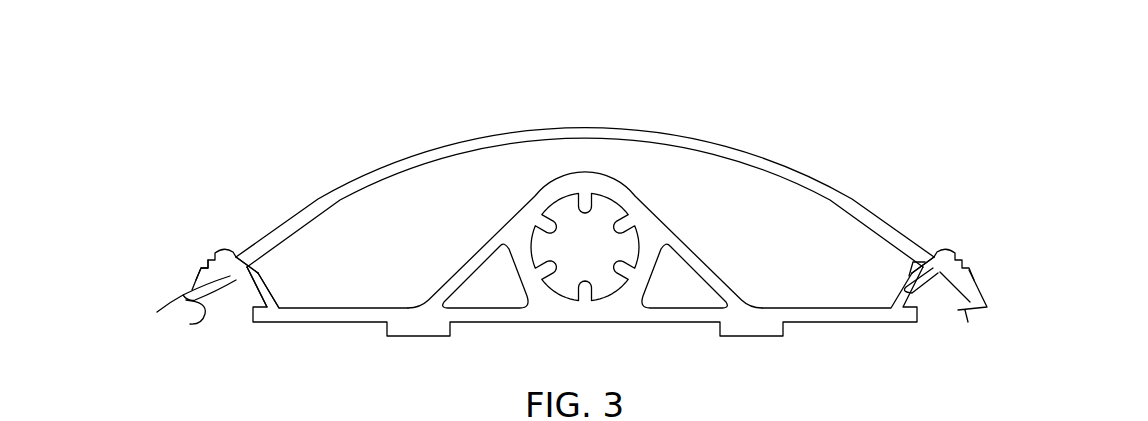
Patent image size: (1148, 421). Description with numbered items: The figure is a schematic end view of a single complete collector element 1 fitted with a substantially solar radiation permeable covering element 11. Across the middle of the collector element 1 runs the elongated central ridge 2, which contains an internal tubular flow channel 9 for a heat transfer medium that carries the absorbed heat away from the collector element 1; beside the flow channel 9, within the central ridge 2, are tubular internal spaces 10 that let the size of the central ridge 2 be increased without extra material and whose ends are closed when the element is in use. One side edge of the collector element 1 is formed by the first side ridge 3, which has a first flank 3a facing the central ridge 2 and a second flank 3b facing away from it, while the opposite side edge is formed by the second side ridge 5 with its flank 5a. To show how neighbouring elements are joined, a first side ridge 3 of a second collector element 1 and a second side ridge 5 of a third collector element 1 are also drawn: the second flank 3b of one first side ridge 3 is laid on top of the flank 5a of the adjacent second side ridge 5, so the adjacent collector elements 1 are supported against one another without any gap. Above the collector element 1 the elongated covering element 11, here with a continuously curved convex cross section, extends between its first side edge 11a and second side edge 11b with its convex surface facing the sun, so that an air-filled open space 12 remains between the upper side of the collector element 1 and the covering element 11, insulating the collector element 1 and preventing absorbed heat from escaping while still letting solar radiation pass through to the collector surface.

The collector element 1 is at (322, 345).
The central ridge 2 is at (618, 198).
The first side ridge 3 is at (225, 228).
The first flank 3a is at (262, 290).
The second flank 3b is at (203, 278).
The second side ridge 5 is at (184, 335).
The flank 5a is at (183, 296).
The internal tubular flow channel 9 is at (593, 262).
The internal spaces 10 is at (500, 287).
The covering element 11 is at (475, 141).
The first side edge 11a is at (236, 280).
The second side edge 11b is at (962, 315).
The open space 12 is at (485, 209).